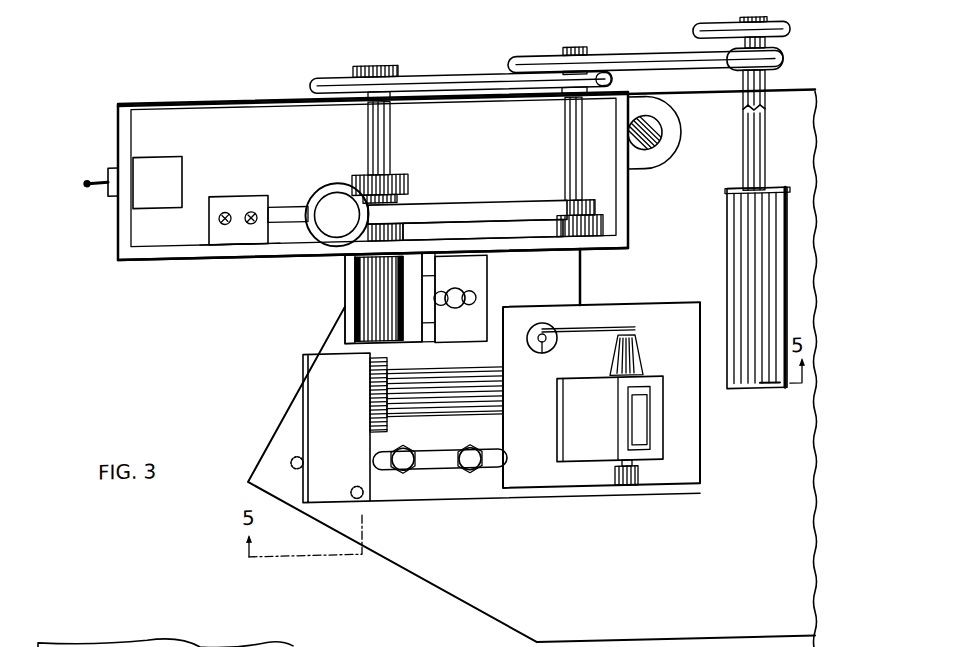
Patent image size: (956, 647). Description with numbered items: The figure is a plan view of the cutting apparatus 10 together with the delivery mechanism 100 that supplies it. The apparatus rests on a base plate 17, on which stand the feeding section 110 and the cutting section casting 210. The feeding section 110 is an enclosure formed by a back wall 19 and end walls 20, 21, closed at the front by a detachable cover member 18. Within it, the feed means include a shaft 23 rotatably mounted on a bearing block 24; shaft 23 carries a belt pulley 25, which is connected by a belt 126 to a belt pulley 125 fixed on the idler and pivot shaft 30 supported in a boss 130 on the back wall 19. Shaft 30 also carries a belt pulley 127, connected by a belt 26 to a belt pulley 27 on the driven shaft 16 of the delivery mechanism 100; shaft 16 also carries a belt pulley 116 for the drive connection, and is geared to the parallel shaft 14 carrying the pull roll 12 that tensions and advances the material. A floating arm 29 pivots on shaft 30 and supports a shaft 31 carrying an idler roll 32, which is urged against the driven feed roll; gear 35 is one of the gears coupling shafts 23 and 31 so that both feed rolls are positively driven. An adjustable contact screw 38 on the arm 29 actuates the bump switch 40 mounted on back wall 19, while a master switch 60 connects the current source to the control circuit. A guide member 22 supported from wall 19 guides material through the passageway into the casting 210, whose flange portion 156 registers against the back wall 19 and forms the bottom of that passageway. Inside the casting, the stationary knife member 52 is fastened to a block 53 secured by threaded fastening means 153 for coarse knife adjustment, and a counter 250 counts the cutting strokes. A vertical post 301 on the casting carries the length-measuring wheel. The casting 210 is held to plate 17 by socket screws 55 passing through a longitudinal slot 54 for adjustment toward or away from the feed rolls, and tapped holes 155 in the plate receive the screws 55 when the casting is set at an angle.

The cutting apparatus 10 is at (182, 105).
The detachable cover member 18 is at (239, 105).
The feeding section 110 is at (183, 236).
The back wall 19 is at (233, 252).
The end wall 21 is at (127, 222).
The master switch 60 is at (109, 168).
The bump switch 40 is at (242, 197).
The adjustable contact screw 38 is at (323, 196).
The belt pulley 25 is at (331, 82).
The belt 126 is at (479, 82).
The belt pulley 125 is at (610, 91).
The shaft 23 is at (370, 131).
The gear 35 is at (400, 195).
The floating arm 29 is at (508, 214).
The shaft 31 is at (393, 232).
The bearing block 24 is at (404, 229).
The boss 130 is at (555, 240).
The idler and pivot shaft 30 is at (565, 157).
The belt pulley 127 is at (544, 62).
The belt 26 is at (662, 68).
The belt pulley 27 is at (735, 81).
The belt pulley 116 is at (703, 38).
The shaft 16 is at (765, 61).
The shaft 14 is at (744, 150).
The delivery mechanism 100 is at (725, 215).
The pull roll 12 is at (740, 276).
The end wall 20 is at (627, 223).
The vertical post 301 is at (646, 150).
The flange portion 156 is at (572, 279).
The cutting section casting 210 is at (687, 292).
The counter 250 is at (612, 440).
The idler roll 32 is at (375, 302).
The stationary knife member 52 is at (345, 278).
The guide member 22 is at (428, 276).
The block 53 is at (485, 278).
The threaded fastening means 153 is at (455, 310).
The slot 54 is at (506, 460).
The socket screws 55 is at (417, 430).
The tapped holes 155 is at (354, 490).
The base plate 17 is at (582, 566).